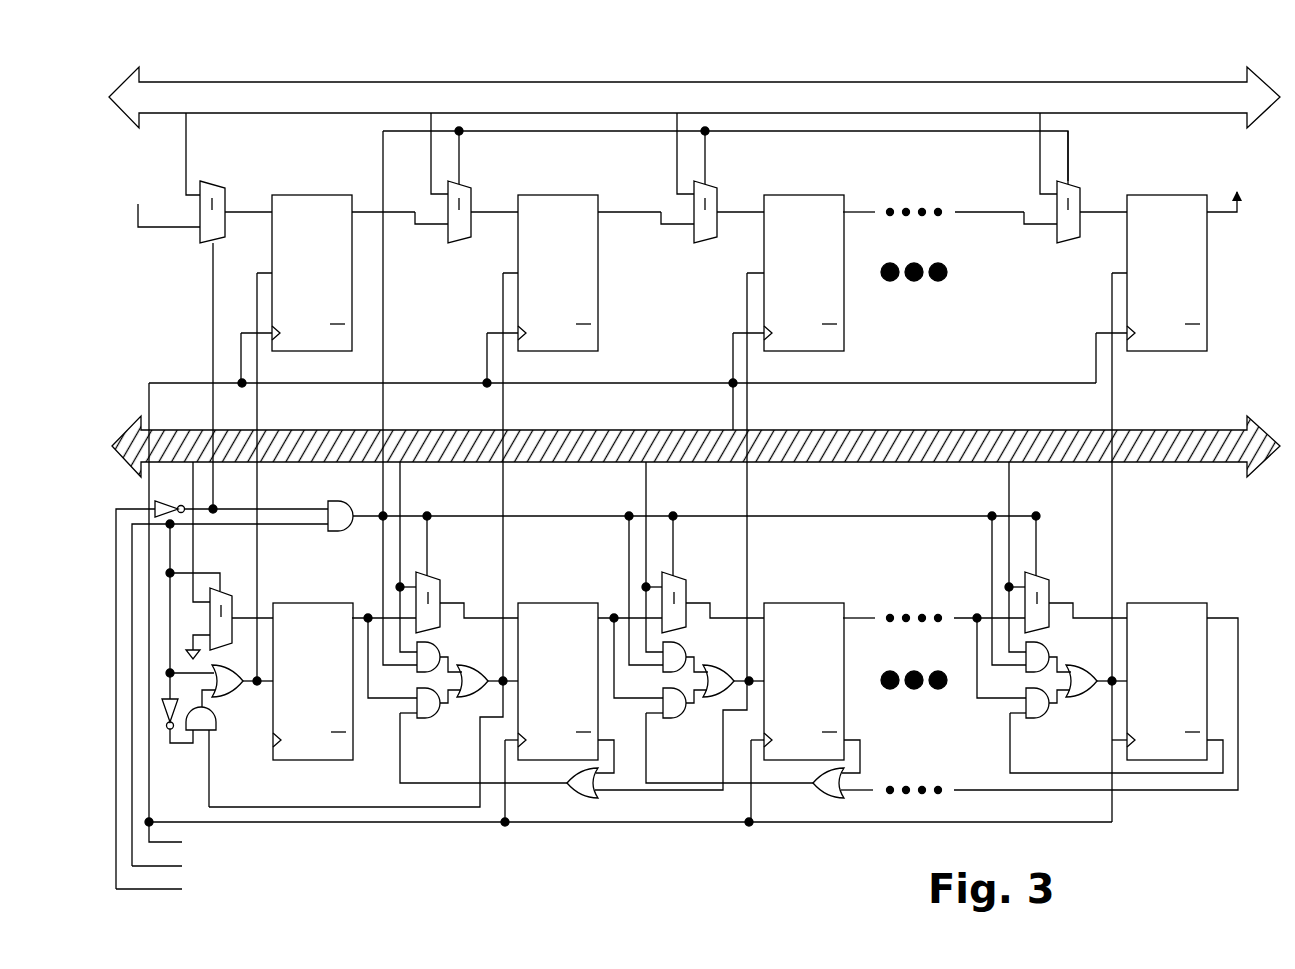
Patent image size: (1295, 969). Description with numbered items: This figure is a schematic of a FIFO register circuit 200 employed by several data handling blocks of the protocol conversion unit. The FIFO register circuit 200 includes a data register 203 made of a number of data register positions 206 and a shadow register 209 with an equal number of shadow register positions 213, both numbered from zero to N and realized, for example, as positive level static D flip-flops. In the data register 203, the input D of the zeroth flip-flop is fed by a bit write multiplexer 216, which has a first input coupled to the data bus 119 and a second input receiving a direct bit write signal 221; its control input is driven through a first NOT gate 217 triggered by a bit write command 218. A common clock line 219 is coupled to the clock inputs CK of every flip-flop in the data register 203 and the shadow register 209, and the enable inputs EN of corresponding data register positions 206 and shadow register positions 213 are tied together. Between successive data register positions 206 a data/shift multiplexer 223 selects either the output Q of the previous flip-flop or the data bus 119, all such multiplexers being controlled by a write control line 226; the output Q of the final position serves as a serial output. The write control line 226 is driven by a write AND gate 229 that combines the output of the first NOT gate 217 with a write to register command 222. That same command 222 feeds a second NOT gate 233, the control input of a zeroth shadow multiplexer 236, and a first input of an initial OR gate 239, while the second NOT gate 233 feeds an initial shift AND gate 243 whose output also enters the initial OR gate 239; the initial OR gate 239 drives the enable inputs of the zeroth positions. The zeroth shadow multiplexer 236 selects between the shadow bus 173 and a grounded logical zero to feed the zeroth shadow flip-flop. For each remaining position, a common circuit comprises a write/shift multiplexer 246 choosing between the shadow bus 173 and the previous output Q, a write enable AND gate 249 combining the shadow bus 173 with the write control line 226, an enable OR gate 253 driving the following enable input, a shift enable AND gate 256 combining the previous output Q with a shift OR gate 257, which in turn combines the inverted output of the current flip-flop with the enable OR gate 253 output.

The data bus 119 is at (770, 108).
The shadow bus 173 is at (972, 455).
The FIFO register circuit 200 is at (1106, 855).
The data register 203 is at (198, 272).
The data register positions 206 is at (303, 192).
The shadow register 209 is at (1138, 541).
The shadow register positions 213 is at (290, 600).
The bit write multiplexer 216 is at (213, 178).
The first NOT gate 217 is at (170, 499).
The bit write command 218 is at (414, 901).
The common clock line 219 is at (637, 386).
The direct bit write signal 221 is at (152, 203).
The write to register command 222 is at (387, 878).
The data/shift multiplexer 223 is at (468, 242).
The write control line 226 is at (917, 135).
The write AND gate 229 is at (337, 498).
The second NOT gate 233 is at (159, 714).
The zeroth shadow multiplexer 236 is at (233, 590).
The initial OR gate 239 is at (242, 693).
The initial shift AND gate 243 is at (217, 735).
The write/shift multiplexer 246 is at (445, 588).
The write enable AND gate 249 is at (434, 641).
The enable OR gate 253 is at (493, 659).
The shift enable AND gate 256 is at (418, 722).
The shift OR gate 257 is at (575, 797).